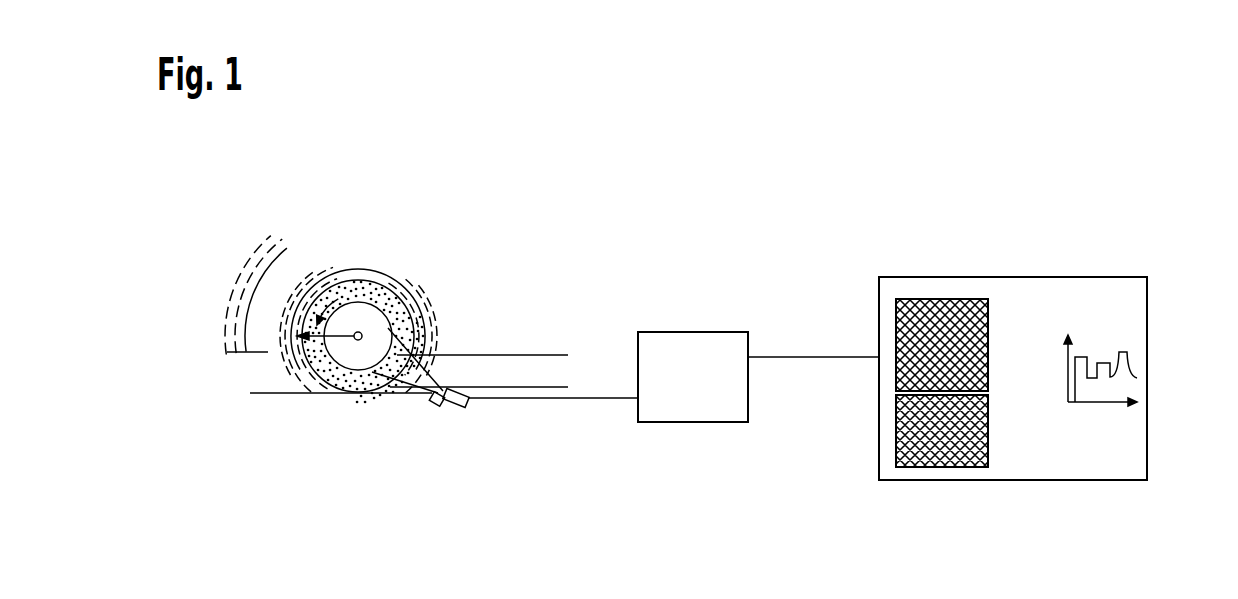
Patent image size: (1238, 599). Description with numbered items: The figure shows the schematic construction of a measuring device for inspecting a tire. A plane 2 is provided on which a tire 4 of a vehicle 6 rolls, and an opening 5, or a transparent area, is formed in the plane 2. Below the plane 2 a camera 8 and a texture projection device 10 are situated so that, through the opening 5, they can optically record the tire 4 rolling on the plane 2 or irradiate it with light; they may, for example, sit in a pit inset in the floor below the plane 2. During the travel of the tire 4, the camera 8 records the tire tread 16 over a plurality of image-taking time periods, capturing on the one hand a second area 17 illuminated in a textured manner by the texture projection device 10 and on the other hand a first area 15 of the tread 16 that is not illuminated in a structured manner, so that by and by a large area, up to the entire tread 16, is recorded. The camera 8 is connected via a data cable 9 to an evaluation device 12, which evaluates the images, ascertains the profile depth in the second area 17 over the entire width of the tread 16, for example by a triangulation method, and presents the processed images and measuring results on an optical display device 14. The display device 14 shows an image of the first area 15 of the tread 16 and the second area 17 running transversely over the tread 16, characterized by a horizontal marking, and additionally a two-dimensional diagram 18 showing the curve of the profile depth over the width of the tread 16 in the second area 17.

The plane 2 is at (263, 395).
The tire 4 is at (333, 396).
The opening 5 is at (405, 408).
The vehicle 6 is at (510, 267).
The camera 8 is at (463, 407).
The data cable 9 is at (585, 400).
The texture projection device 10 is at (433, 407).
The evaluation device 12 is at (692, 332).
The optical display device 14 is at (1030, 277).
The first area 15 is at (941, 313).
The tire tread 16 is at (1003, 326).
The second area 17 is at (988, 392).
The two-dimensional diagram 18 is at (1088, 425).